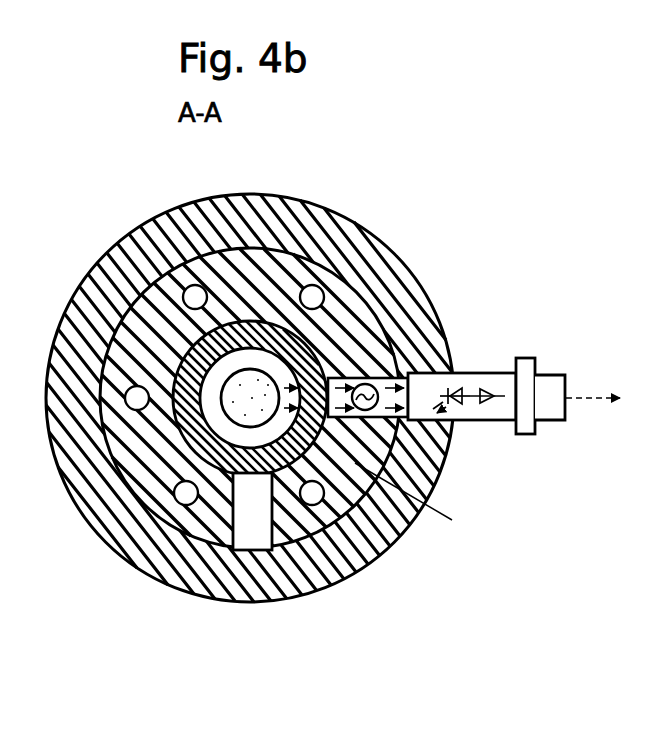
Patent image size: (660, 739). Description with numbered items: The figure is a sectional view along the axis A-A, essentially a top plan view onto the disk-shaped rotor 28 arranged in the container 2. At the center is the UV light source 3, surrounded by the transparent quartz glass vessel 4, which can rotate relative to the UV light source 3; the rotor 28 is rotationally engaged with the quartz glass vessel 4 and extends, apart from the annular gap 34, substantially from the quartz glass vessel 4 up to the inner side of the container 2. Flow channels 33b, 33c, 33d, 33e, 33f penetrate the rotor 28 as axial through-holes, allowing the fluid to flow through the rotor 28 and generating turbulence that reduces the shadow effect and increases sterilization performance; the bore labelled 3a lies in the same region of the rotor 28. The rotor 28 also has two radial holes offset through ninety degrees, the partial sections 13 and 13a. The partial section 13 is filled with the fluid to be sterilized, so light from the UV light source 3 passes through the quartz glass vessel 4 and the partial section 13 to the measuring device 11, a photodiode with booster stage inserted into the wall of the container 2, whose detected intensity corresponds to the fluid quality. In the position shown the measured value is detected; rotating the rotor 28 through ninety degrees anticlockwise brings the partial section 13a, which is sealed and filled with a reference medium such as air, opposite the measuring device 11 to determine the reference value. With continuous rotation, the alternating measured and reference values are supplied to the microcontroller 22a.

The container 2 is at (63, 368).
The UV light source 3 is at (250, 398).
The bore 3a is at (124, 404).
The transparent quartz glass vessel 4 is at (140, 293).
The measuring device 11 is at (499, 451).
The partial section 13 is at (405, 390).
The partial section 13a is at (250, 507).
The microcontroller 22a is at (594, 417).
The rotor 28 is at (422, 504).
The flow channel 33b is at (372, 385).
The flow channel 33c is at (313, 497).
The flow channel 33d is at (186, 493).
The flow channel 33e is at (195, 297).
The flow channel 33f is at (312, 297).
The annular gap 34 is at (110, 460).